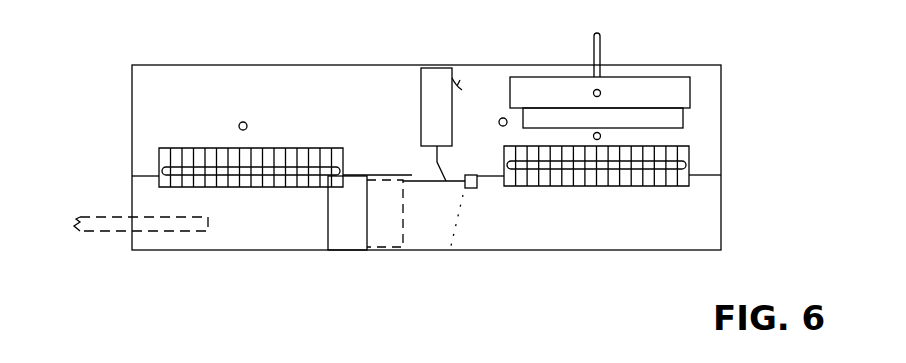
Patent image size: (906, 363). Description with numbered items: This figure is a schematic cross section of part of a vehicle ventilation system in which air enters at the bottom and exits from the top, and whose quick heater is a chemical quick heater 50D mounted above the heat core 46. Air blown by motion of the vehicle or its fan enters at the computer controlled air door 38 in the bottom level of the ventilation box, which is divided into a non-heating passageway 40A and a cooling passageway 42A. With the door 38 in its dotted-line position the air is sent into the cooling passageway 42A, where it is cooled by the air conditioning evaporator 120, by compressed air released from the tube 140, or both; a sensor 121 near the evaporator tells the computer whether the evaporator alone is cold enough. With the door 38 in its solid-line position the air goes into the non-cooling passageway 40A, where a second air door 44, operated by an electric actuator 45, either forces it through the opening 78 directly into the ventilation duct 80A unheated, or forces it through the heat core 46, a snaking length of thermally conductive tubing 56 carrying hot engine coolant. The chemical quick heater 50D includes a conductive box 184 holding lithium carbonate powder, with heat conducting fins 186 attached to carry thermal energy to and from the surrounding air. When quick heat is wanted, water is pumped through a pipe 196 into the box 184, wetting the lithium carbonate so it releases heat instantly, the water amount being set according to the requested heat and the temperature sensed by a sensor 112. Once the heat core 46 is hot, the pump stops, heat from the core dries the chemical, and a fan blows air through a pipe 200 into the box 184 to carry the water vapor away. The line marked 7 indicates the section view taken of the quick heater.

The section line / viewing direction 7 is at (598, 280).
The air door 38 is at (347, 213).
The non-heating passageway 40A is at (413, 232).
The cooling passageway 42A is at (296, 223).
The air door 44 is at (458, 190).
The electric actuator 45 is at (421, 120).
The heat core 46 is at (617, 198).
The chemical quick heater 50D is at (555, 72).
The thermally conductive tubing 56 is at (531, 186).
The opening 78 is at (430, 172).
The ventilation duct 80A is at (355, 83).
The sensor 112 is at (506, 126).
The air conditioning evaporator 120 is at (208, 122).
The sensor 121 is at (246, 129).
The tube 140 is at (186, 233).
The conductive box 184 is at (692, 88).
The heat conducting fins 186 is at (685, 118).
The pipe 196 is at (597, 31).
The pipe 200 is at (601, 136).